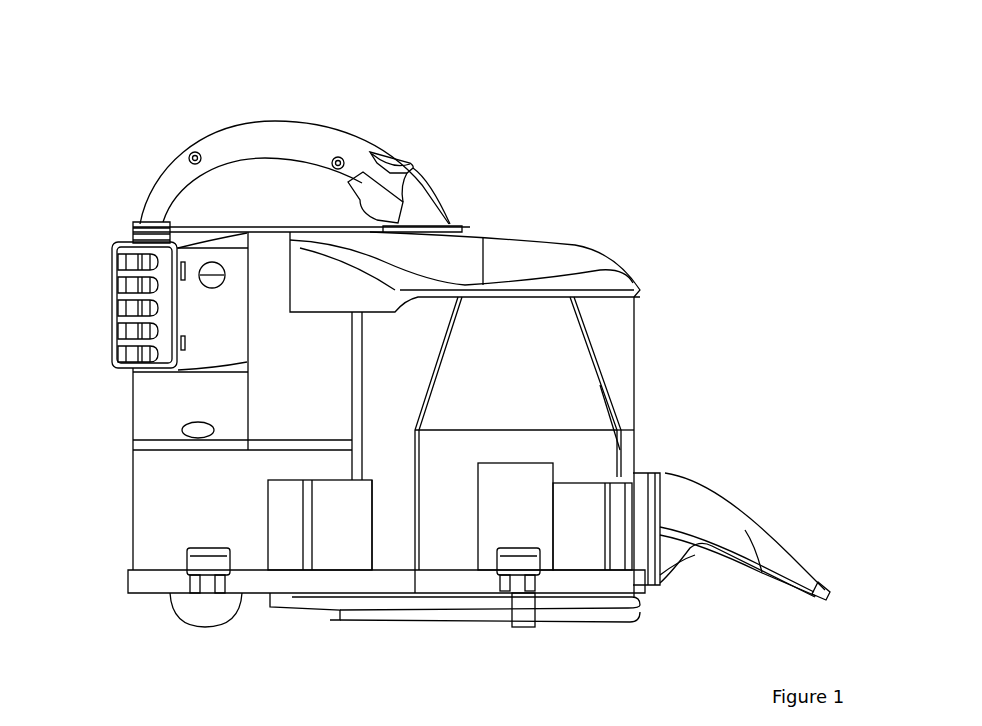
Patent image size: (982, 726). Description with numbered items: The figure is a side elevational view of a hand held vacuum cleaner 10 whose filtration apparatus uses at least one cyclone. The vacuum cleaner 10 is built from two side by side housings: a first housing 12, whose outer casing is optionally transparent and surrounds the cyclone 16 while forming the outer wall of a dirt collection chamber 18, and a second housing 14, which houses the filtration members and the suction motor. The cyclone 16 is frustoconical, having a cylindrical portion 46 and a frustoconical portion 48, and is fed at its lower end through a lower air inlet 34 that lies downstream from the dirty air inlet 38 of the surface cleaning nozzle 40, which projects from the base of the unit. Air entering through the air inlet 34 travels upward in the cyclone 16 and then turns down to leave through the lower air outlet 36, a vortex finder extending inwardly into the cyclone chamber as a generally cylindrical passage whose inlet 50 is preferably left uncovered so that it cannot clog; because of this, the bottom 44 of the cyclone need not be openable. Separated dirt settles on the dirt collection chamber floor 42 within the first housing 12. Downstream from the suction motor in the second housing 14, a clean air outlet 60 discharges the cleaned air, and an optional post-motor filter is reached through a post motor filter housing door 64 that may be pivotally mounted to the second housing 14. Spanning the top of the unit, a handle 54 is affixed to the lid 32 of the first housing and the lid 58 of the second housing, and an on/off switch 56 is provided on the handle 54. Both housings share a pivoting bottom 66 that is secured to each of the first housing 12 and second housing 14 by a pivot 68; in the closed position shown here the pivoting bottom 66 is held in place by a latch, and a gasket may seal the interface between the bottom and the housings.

The vacuum cleaner 10 is at (646, 127).
The first housing 12 is at (637, 300).
The second housing 14 is at (133, 410).
The cyclone 16 is at (598, 360).
The dirt collection chamber 18 is at (623, 422).
The lid 32 is at (560, 243).
The lower air inlet 34 is at (590, 547).
The lower air outlet 36 is at (487, 532).
The dirty air inlet 38 is at (803, 593).
The surface cleaning nozzle 40 is at (793, 557).
The dirt collection chamber floor 42 is at (385, 563).
The bottom 44 is at (435, 560).
The cylindrical portion 46 is at (618, 462).
The frustoconical portion 48 is at (602, 380).
The inlet 50 is at (535, 463).
The handle 54 is at (271, 121).
The on/off switch 56 is at (382, 151).
The lid 58 is at (200, 226).
The clean air outlet 60 is at (117, 262).
The post motor filter housing door 64 is at (166, 263).
The pivoting bottom 66 is at (563, 620).
The pivot 68 is at (198, 565).